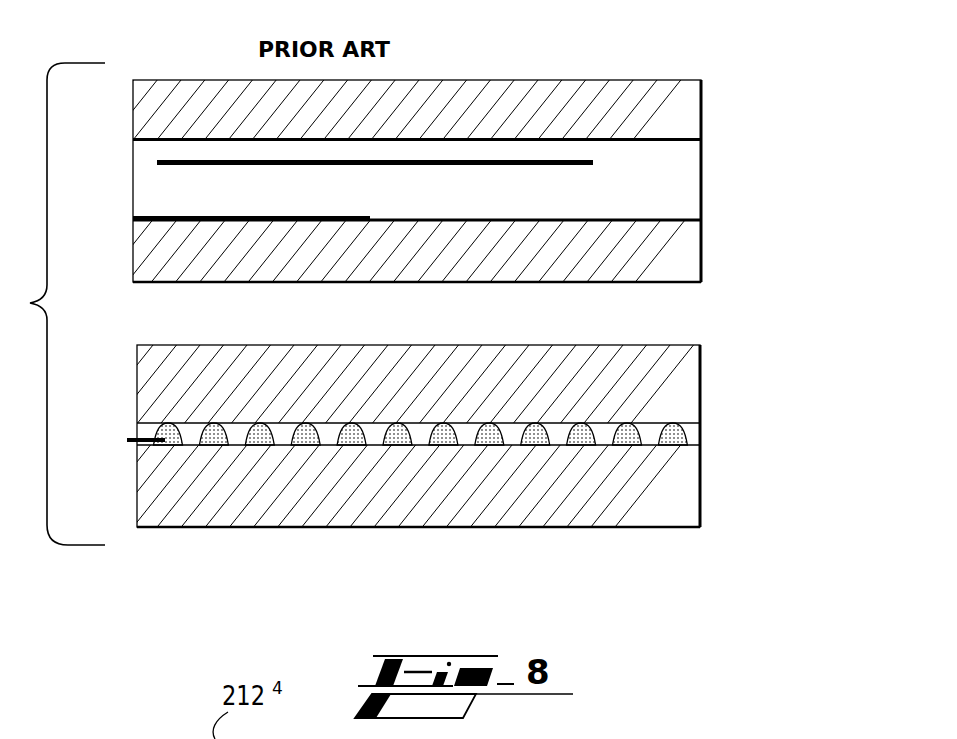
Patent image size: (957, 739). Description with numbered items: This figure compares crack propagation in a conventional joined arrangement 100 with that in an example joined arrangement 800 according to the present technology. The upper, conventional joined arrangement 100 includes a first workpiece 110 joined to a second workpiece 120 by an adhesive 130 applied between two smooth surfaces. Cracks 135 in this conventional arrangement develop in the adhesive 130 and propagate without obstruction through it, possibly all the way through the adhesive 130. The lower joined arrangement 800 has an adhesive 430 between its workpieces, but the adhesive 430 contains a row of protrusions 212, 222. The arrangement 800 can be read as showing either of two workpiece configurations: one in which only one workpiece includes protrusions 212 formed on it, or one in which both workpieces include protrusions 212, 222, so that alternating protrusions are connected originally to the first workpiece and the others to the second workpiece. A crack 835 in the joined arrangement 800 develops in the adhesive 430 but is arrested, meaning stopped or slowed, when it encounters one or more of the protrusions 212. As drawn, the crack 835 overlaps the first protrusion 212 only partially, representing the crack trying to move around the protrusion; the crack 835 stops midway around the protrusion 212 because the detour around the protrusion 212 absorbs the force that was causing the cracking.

The conventional adhesive-bonded system 100 is at (437, 179).
The second workpiece 120 is at (714, 110).
The adhesive 130 is at (662, 200).
The first workpiece 110 is at (714, 244).
The cracks 135 is at (165, 170).
The joined arrangement 800 is at (395, 456).
The adhesive 430 is at (708, 432).
The protrusions 212 is at (170, 422).
The protrusions 222 is at (421, 457).
The crack 835 is at (140, 432).